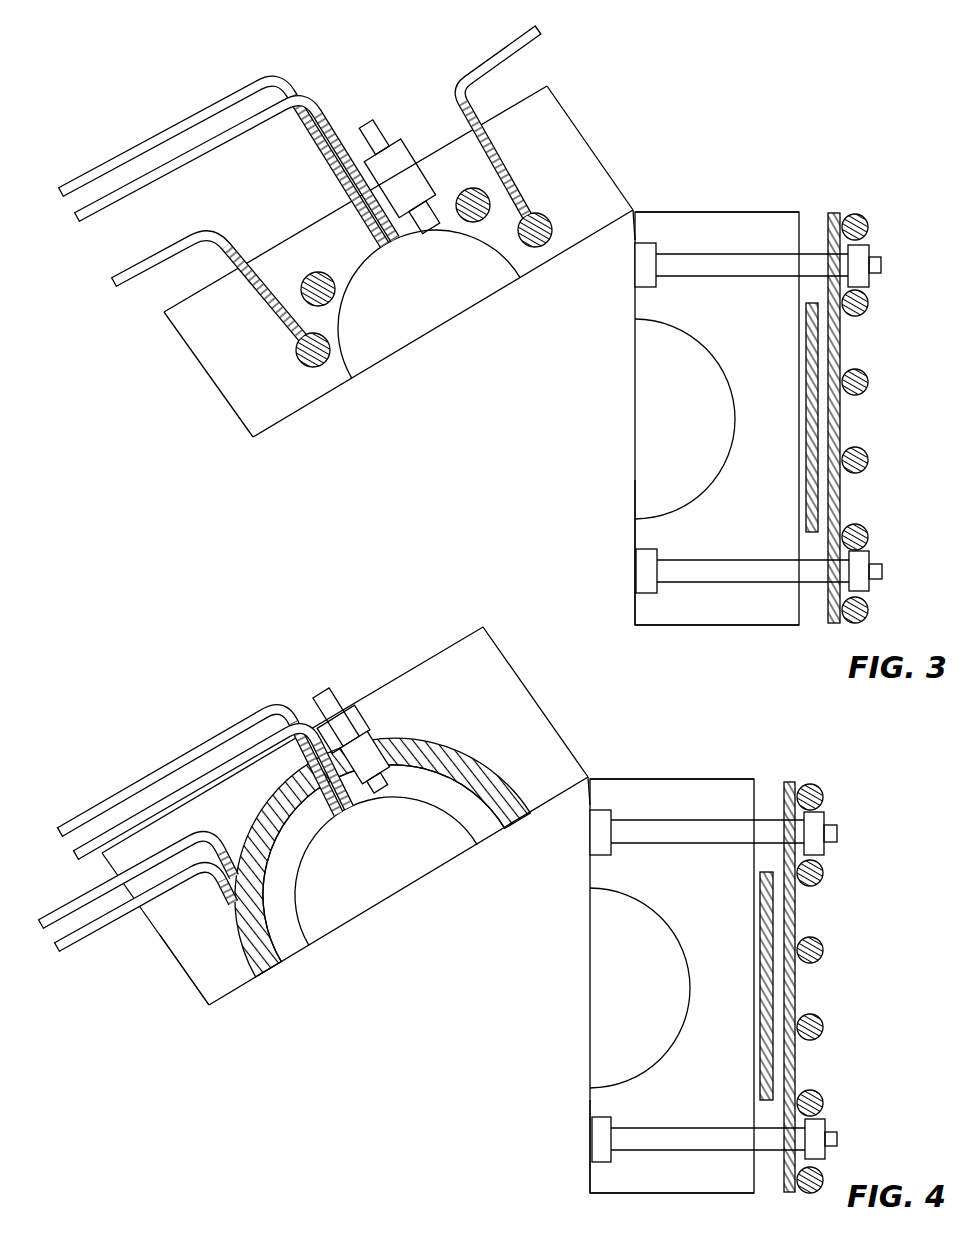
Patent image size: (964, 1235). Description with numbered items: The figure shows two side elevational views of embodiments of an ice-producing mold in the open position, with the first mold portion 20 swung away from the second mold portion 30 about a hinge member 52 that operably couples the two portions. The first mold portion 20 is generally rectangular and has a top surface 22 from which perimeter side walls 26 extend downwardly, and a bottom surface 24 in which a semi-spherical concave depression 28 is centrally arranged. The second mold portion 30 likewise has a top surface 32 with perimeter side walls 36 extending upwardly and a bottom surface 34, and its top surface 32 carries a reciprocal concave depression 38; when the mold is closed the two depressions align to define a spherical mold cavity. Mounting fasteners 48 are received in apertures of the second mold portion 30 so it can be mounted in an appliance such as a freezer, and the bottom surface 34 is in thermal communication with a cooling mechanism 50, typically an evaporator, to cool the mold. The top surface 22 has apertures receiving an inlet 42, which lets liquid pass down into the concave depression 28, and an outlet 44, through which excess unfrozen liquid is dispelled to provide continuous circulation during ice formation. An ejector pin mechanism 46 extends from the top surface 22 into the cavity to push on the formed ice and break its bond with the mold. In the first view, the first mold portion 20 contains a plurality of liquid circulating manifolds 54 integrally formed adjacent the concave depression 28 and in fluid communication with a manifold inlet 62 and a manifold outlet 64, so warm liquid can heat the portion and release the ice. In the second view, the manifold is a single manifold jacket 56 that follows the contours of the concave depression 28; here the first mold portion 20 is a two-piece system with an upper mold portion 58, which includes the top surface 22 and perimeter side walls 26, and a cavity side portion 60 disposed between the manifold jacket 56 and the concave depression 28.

In FIG. 3, the first mold portion 20 is at (582, 146).
In FIG. 4, the first mold portion 20 is at (548, 722).
In FIG. 3, the top surface 22 is at (520, 103).
In FIG. 3, the bottom surface 24 is at (547, 263).
In FIG. 4, the bottom surface 24 is at (502, 829).
In FIG. 3, the perimeter side wall 26 is at (248, 444).
In FIG. 4, the perimeter side wall 26 is at (159, 934).
In FIG. 3, the concave depression 28 is at (349, 355).
In FIG. 4, the concave depression 28 is at (305, 930).
In FIG. 3, the second mold portion 30 is at (764, 616).
In FIG. 4, the second mold portion 30 is at (695, 1175).
In FIG. 3, the top surface 32 is at (635, 530).
In FIG. 4, the top surface 32 is at (590, 1172).
In FIG. 3, the bottom surface 34 is at (783, 226).
In FIG. 4, the bottom surface 34 is at (737, 800).
In FIG. 3, the perimeter side wall 36 is at (756, 210).
In FIG. 4, the perimeter side wall 36 is at (679, 778).
In FIG. 3, the concave depression 38 is at (660, 510).
In FIG. 4, the concave depression 38 is at (610, 1082).
In FIG. 3, the inlet 42 is at (76, 220).
In FIG. 4, the inlet 42 is at (77, 853).
In FIG. 3, the outlet 44 is at (58, 195).
In FIG. 4, the outlet 44 is at (60, 829).
In FIG. 3, the ejector pin mechanism 46 is at (371, 130).
In FIG. 4, the ejector pin mechanism 46 is at (351, 740).
In FIG. 3, the mounting fastener 48 is at (860, 258).
In FIG. 4, the mounting fastener 48 is at (818, 822).
In FIG. 3, the cooling mechanism 50 is at (815, 506).
In FIG. 4, the cooling mechanism 50 is at (768, 1067).
In FIG. 3, the hinge member 52 is at (640, 206).
In FIG. 4, the hinge member 52 is at (590, 778).
In FIG. 3, the liquid circulating manifold 54 is at (468, 190).
In FIG. 4, the manifold jacket 56 is at (272, 970).
In FIG. 4, the upper mold portion 58 is at (202, 947).
In FIG. 4, the cavity side portion 60 is at (278, 898).
In FIG. 3, the manifold inlet 62 is at (540, 30).
In FIG. 4, the manifold inlet 62 is at (58, 945).
In FIG. 3, the manifold outlet 64 is at (112, 284).
In FIG. 4, the manifold outlet 64 is at (42, 922).